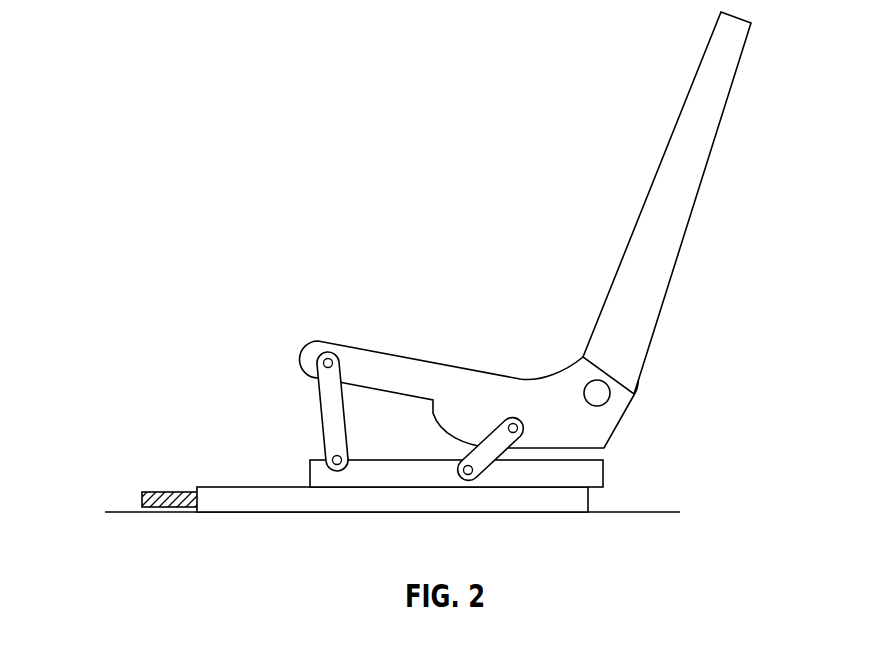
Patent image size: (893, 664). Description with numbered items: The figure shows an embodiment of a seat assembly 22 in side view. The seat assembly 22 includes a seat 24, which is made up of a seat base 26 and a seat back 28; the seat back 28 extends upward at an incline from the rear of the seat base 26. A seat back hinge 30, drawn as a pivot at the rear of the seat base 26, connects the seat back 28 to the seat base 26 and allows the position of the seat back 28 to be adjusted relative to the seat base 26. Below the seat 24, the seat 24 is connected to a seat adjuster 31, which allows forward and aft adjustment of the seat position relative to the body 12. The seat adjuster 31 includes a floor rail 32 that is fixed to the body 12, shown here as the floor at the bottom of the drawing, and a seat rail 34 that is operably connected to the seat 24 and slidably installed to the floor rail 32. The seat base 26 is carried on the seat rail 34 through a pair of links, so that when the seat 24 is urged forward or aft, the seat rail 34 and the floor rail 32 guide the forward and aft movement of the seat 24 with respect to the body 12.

The body 12 is at (123, 511).
The seat assembly 22 is at (542, 230).
The seat 24 is at (683, 203).
The seat base 26 is at (363, 368).
The seat back 28 is at (713, 105).
The seat back hinge 30 is at (610, 393).
The seat adjuster 31 is at (490, 293).
The floor rail 32 is at (527, 500).
The seat rail 34 is at (606, 470).